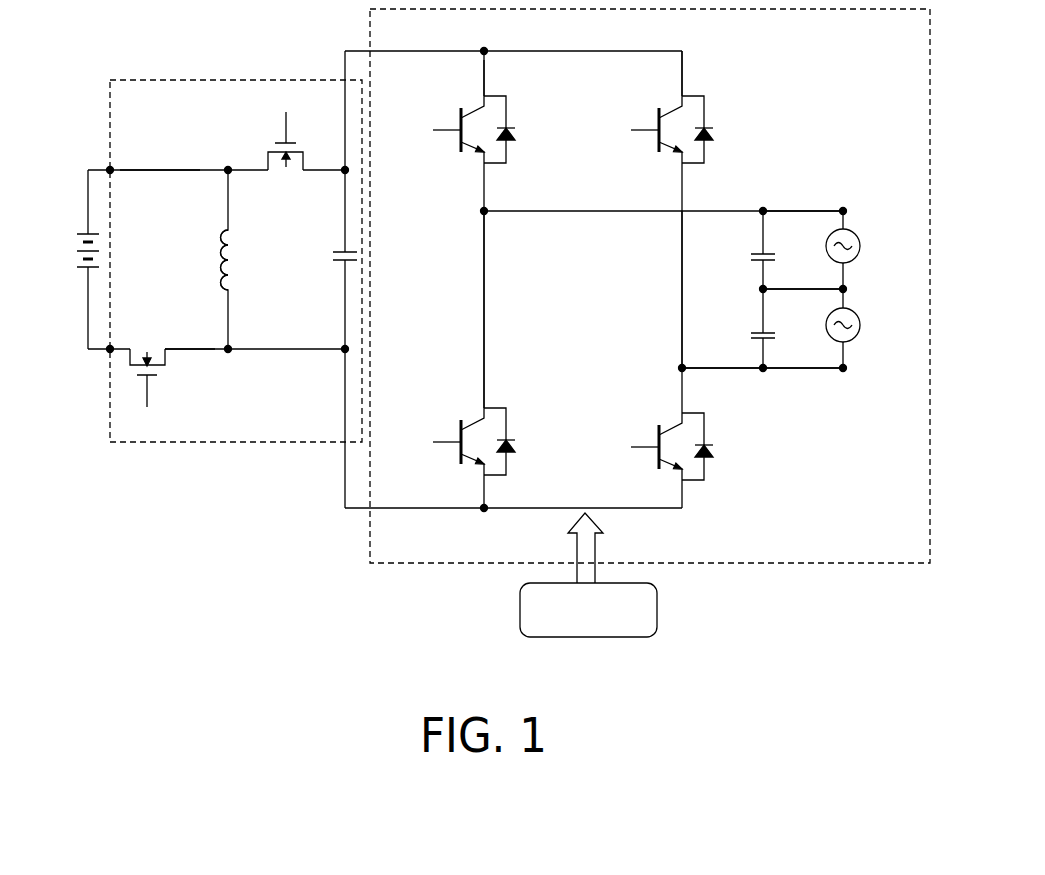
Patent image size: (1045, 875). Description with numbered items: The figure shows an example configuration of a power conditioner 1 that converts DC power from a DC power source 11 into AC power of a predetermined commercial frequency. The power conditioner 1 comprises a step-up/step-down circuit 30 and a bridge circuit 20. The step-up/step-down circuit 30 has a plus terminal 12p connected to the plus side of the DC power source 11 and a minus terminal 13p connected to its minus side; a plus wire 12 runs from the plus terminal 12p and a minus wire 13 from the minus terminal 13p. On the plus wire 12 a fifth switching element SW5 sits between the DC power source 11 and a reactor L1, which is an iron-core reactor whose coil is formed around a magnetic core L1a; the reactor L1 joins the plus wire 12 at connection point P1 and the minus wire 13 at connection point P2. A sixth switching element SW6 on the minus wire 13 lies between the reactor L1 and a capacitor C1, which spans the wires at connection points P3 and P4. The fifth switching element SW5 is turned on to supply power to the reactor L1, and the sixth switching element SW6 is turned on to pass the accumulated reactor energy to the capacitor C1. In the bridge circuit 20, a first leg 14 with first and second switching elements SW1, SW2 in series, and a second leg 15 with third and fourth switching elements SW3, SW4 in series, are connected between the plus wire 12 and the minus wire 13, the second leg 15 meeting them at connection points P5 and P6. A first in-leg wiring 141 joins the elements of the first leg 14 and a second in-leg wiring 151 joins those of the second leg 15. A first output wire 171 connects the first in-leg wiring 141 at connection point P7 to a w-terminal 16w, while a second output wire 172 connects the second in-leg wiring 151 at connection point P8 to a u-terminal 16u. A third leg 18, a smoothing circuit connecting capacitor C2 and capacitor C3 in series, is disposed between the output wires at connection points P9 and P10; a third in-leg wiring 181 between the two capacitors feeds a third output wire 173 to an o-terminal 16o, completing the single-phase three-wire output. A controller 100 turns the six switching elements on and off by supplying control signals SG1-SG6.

The power conditioner 1 is at (90, 60).
The step-up/step-down circuit 30 is at (142, 80).
The bridge circuit 20 is at (858, 565).
The DC power source 11 is at (84, 233).
The minus wire 13 is at (166, 170).
The minus terminal 13p is at (112, 172).
The connection point P2 is at (227, 169).
The sixth switching element SW6 is at (282, 142).
The connection point P4 is at (342, 172).
The reactor L1 is at (222, 232).
The magnetic core L1a is at (210, 272).
The capacitor C1 is at (343, 253).
The plus terminal 12p is at (112, 348).
The plus wire 12 is at (175, 352).
The fifth switching element SW5 is at (160, 377).
The connection point P1 is at (230, 353).
The connection point P3 is at (343, 348).
The connection point P6 is at (485, 50).
The second leg 15 is at (484, 82).
The fourth switching element SW4 is at (506, 112).
The first leg 14 is at (683, 72).
The second switching element SW2 is at (704, 110).
The third switching element SW3 is at (506, 422).
The first switching element SW1 is at (706, 481).
The connection point P8 is at (483, 210).
The second in-leg wiring 151 is at (484, 262).
The first in-leg wiring 141 is at (682, 262).
The connection point P7 is at (681, 367).
The connection point P10 is at (764, 209).
The second output wire 172 is at (816, 209).
The u-terminal 16u is at (845, 210).
The capacitor C2 is at (755, 257).
The third output wire 173 is at (784, 289).
The third in-leg wiring 181 is at (764, 303).
The o-terminal 16o is at (846, 289).
The capacitor C3 is at (756, 336).
The third leg 18 is at (762, 366).
The first output wire 171 is at (778, 369).
The connection point P9 is at (765, 371).
The w-terminal 16w is at (846, 370).
The connection point P5 is at (485, 510).
The control signals SG1-SG6 is at (644, 548).
The controller 100 is at (657, 614).